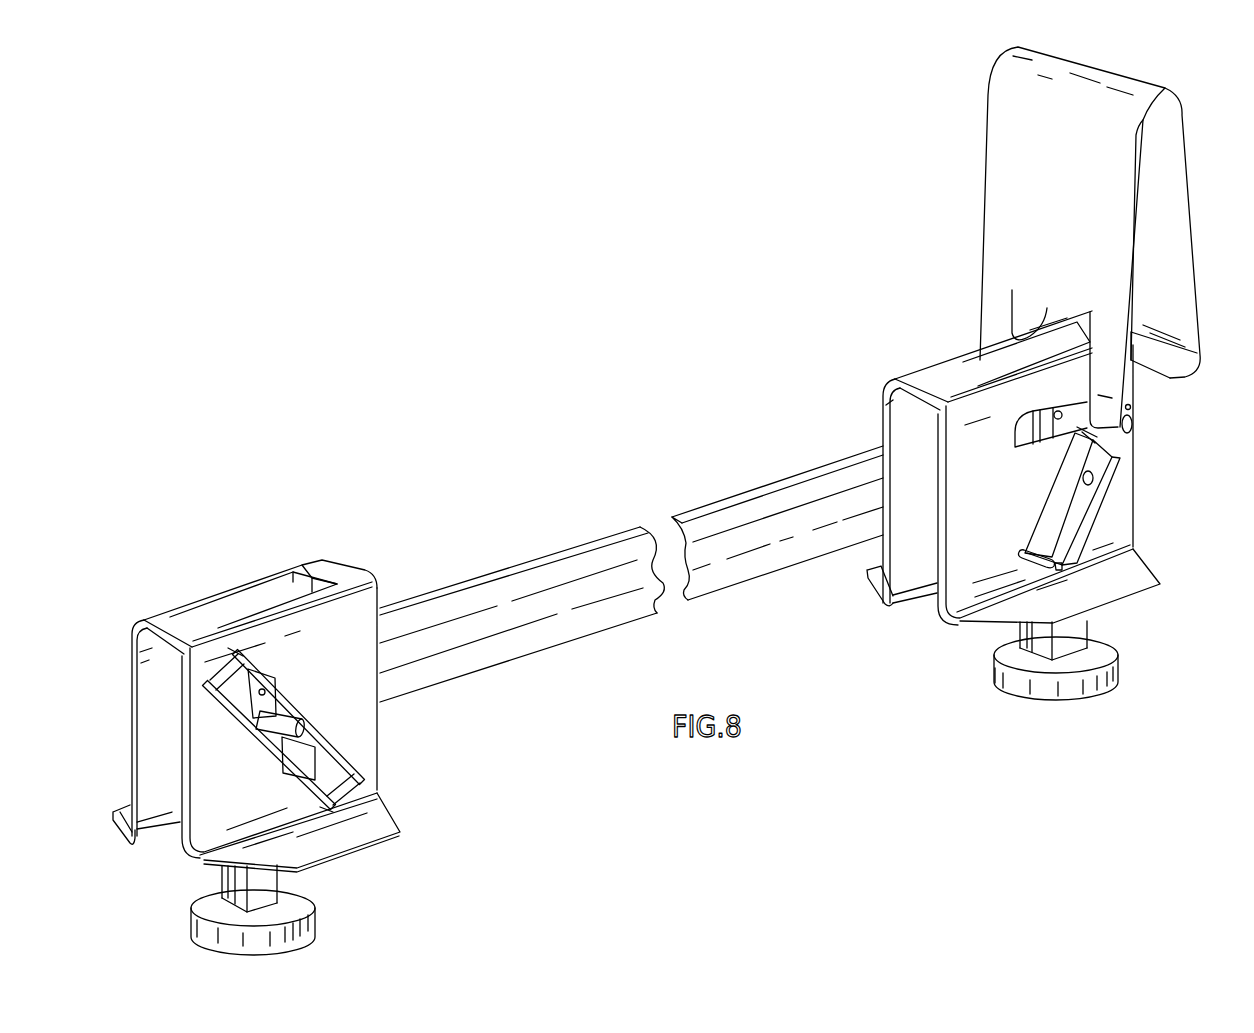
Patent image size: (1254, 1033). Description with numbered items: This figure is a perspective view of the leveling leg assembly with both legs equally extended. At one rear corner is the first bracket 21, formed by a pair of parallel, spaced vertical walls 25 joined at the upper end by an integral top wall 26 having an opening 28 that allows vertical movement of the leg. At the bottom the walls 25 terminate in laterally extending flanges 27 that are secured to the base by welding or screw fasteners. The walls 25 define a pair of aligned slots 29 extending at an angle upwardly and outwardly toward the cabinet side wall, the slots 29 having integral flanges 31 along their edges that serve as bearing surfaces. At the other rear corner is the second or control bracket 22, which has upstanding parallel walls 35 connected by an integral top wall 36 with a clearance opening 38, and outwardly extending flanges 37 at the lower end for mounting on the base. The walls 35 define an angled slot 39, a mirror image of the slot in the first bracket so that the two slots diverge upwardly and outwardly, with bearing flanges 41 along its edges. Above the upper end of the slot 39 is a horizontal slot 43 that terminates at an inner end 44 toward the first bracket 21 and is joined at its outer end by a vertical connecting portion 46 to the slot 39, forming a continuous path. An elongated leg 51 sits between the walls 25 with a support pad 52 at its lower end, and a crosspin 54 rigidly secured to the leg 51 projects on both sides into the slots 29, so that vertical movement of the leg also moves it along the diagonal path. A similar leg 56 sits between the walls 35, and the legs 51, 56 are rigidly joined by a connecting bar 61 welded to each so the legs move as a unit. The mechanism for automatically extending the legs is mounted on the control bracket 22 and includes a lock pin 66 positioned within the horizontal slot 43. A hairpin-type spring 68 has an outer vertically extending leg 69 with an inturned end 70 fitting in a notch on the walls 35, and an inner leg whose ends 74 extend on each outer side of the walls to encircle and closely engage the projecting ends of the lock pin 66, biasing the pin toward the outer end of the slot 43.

The first bracket 21 is at (360, 733).
The second bracket 22 is at (892, 426).
The vertical walls 25 is at (188, 748).
The top wall 26 is at (332, 573).
The flanges 27 is at (120, 806).
The opening 28 is at (225, 592).
The slots 29 is at (266, 690).
The flanges 31 is at (297, 703).
The walls 35 is at (1120, 513).
The top wall 36 is at (922, 379).
The flanges 37 is at (867, 581).
The opening 38 is at (958, 363).
The slot 39 is at (1024, 549).
The bearing flanges 41 is at (1050, 513).
The horizontal slot 43 is at (1056, 413).
The inner end 44 is at (1013, 444).
The vertical connecting portion 46 is at (1097, 440).
The leg 51 is at (265, 881).
The support pad 52 is at (298, 937).
The crosspin 54 is at (292, 716).
The leg 56 is at (1033, 638).
The connecting bar 61 is at (537, 578).
The lock pin 66 is at (1135, 429).
The hairpin-type spring 68 is at (1023, 195).
The outer leg 69 is at (1175, 298).
The inturned end 70 is at (1178, 367).
The ends 74 is at (1133, 408).